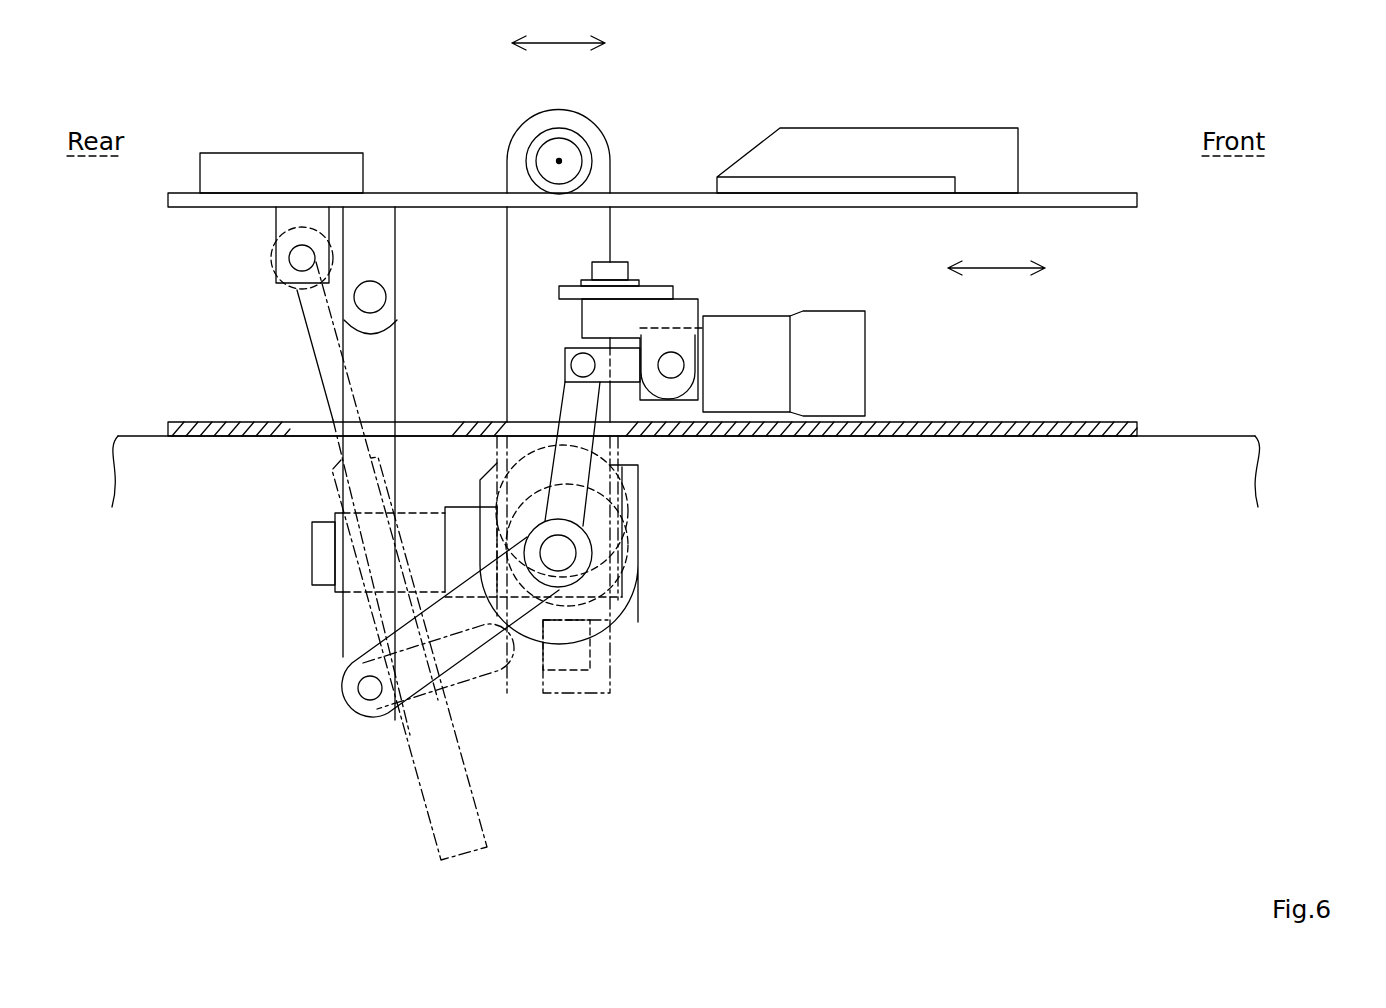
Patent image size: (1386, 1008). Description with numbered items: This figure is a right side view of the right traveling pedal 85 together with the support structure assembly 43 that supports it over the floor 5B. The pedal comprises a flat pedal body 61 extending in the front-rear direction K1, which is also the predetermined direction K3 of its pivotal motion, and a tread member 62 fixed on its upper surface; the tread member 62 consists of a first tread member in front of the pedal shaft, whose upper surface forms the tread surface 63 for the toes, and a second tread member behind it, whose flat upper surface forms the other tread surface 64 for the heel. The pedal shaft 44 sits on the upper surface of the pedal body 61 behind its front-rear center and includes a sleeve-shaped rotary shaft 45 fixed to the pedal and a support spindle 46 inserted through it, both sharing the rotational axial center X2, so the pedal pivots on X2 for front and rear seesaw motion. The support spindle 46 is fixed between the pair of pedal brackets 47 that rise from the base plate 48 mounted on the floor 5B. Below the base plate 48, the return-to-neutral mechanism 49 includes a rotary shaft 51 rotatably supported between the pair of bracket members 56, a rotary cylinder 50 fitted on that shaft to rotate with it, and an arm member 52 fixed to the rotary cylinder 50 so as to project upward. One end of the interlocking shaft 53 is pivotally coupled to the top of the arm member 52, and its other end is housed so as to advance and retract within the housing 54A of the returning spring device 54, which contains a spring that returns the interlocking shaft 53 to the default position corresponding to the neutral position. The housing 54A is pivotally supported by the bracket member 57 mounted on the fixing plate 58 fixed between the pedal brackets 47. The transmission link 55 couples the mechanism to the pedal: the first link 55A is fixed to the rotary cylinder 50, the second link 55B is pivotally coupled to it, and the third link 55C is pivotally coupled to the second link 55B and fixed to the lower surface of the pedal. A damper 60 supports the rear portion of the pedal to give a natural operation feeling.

The floor 5B is at (1172, 436).
The support structure assembly 43 is at (745, 560).
The pedal shaft 44 is at (595, 130).
The rotary shaft 45 is at (593, 160).
The support spindle 46 is at (540, 145).
The pedal bracket 47 is at (612, 230).
The base plate 48 is at (966, 422).
The return-to-neutral mechanism 49 is at (546, 384).
The rotary cylinder 50 is at (593, 568).
The rotary shaft 51 is at (577, 547).
The arm member 52 is at (600, 448).
The interlocking shaft 53 is at (632, 338).
The returning spring device 54 is at (848, 296).
The housing 54A is at (850, 352).
The transmission link 55 is at (322, 637).
The first link 55A is at (490, 660).
The second link 55B is at (343, 607).
The third link 55C is at (397, 233).
The bracket member 56 is at (632, 493).
The bracket member 57 is at (673, 293).
The fixing plate 58 is at (568, 286).
The damper 60 is at (400, 767).
The pedal body 61 is at (1095, 193).
The tread member 62 is at (240, 123).
The tread surface 63 is at (824, 128).
The tread surface 64 is at (332, 153).
The traveling pedal 85 is at (1065, 111).
The front-rear direction K1 is at (562, 43).
The predetermined direction K3 is at (1000, 268).
The rotational axial center X2 is at (559, 160).